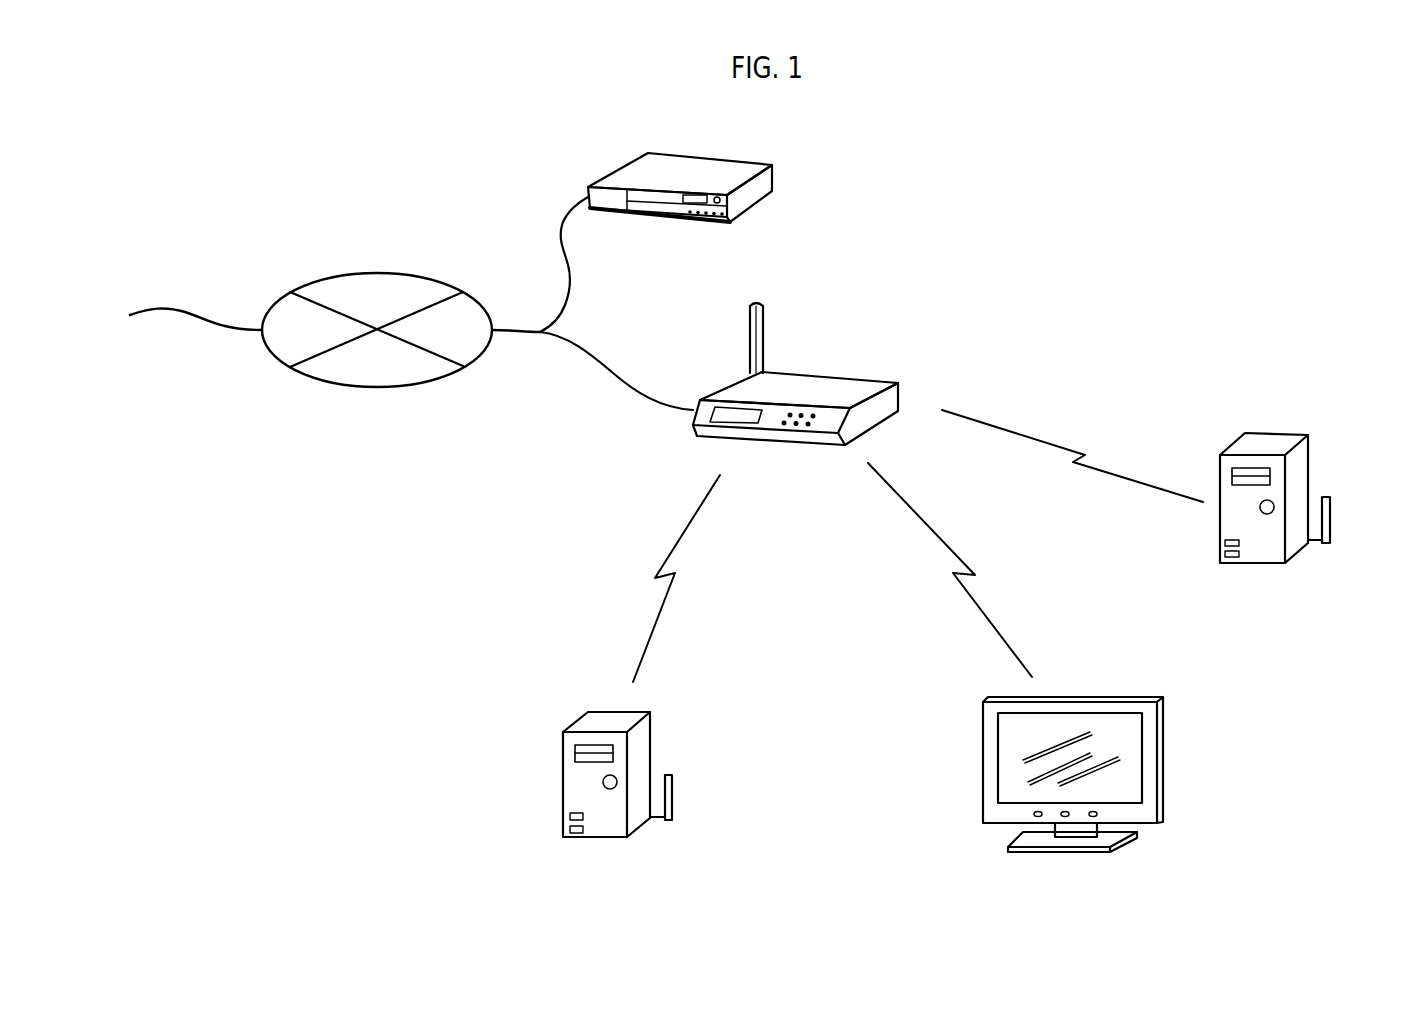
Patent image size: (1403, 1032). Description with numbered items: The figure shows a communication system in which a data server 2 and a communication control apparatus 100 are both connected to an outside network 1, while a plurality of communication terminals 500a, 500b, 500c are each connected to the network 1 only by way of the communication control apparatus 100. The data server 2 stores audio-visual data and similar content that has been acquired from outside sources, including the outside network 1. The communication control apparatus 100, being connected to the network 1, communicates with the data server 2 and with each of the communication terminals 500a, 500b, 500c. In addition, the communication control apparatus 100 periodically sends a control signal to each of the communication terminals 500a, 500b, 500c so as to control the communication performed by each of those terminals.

The outside network 1 is at (377, 272).
The data server 2 is at (737, 163).
The communication control apparatus 100 is at (853, 375).
The communication terminal 500a is at (650, 712).
The communication terminal 500b is at (1162, 698).
The communication terminal 500c is at (1307, 437).